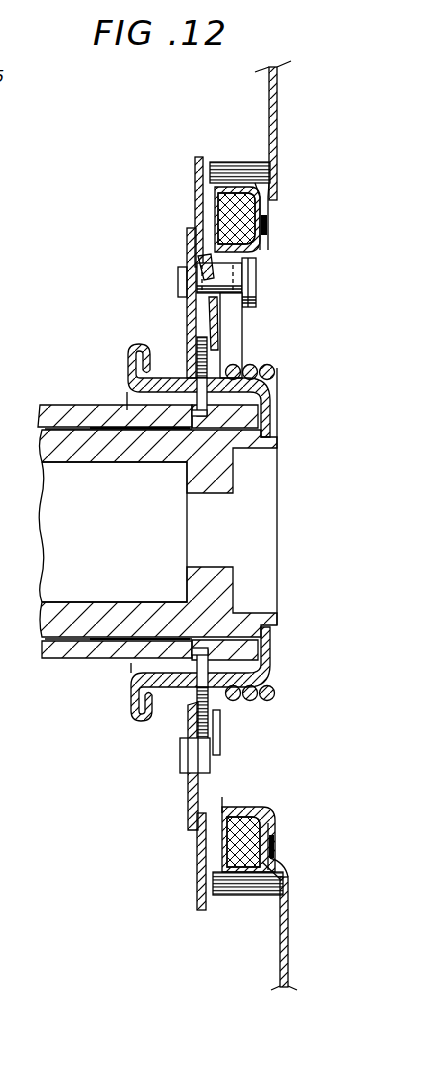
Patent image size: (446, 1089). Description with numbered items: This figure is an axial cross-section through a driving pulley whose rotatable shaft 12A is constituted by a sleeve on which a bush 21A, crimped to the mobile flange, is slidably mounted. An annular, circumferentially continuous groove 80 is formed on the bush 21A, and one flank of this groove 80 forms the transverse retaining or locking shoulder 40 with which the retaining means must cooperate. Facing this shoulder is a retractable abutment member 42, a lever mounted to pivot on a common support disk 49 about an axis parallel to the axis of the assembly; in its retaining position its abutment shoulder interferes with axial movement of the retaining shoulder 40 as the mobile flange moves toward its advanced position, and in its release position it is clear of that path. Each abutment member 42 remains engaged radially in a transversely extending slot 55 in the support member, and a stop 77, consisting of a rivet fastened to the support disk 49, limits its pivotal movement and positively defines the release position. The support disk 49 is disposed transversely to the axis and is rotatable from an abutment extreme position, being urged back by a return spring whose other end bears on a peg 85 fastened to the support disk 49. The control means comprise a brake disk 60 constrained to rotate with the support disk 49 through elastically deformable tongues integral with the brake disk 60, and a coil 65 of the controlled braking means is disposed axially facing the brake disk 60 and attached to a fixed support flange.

The brake disk 60 is at (200, 156).
The support disk 49 is at (183, 229).
The peg 85 is at (264, 272).
The slot 55 is at (209, 373).
The retractable abutment member 42 is at (197, 393).
The bush 21A is at (78, 400).
The shaft 12A is at (34, 432).
The transverse retaining shoulder 40 is at (205, 418).
The groove 80 is at (222, 645).
The stop 77 is at (209, 768).
The coil 65 is at (258, 815).